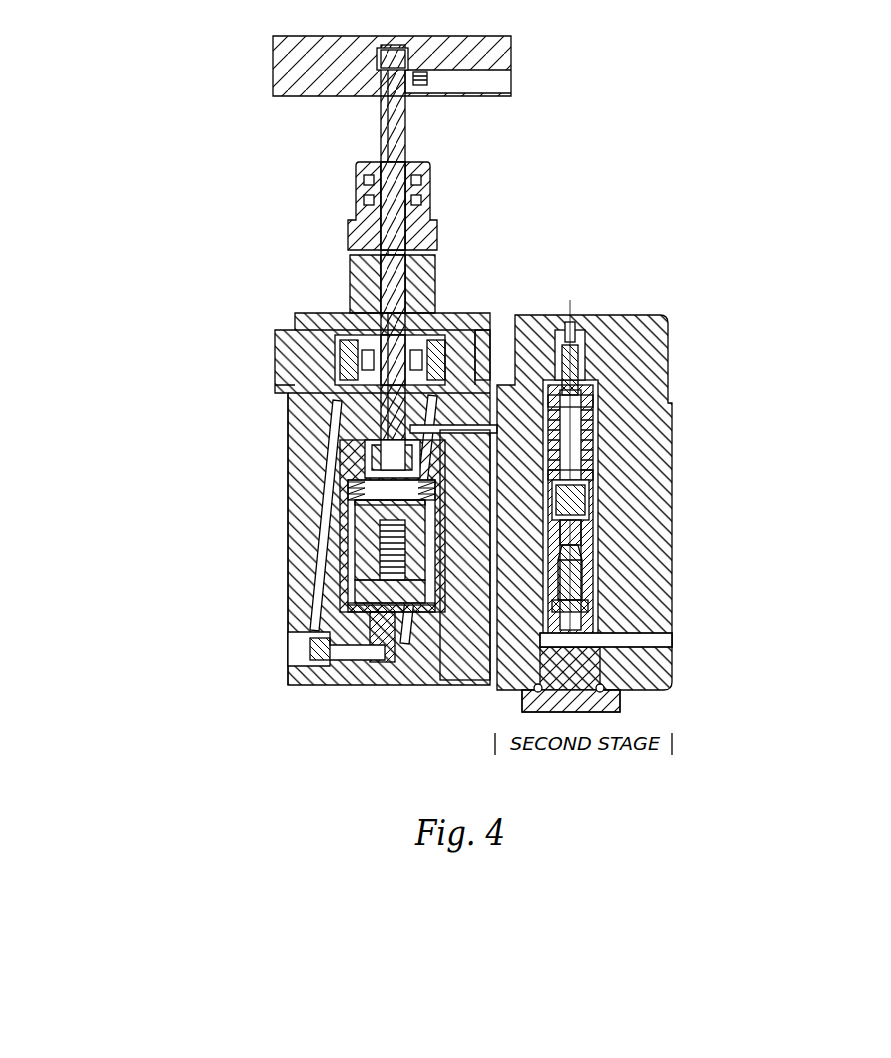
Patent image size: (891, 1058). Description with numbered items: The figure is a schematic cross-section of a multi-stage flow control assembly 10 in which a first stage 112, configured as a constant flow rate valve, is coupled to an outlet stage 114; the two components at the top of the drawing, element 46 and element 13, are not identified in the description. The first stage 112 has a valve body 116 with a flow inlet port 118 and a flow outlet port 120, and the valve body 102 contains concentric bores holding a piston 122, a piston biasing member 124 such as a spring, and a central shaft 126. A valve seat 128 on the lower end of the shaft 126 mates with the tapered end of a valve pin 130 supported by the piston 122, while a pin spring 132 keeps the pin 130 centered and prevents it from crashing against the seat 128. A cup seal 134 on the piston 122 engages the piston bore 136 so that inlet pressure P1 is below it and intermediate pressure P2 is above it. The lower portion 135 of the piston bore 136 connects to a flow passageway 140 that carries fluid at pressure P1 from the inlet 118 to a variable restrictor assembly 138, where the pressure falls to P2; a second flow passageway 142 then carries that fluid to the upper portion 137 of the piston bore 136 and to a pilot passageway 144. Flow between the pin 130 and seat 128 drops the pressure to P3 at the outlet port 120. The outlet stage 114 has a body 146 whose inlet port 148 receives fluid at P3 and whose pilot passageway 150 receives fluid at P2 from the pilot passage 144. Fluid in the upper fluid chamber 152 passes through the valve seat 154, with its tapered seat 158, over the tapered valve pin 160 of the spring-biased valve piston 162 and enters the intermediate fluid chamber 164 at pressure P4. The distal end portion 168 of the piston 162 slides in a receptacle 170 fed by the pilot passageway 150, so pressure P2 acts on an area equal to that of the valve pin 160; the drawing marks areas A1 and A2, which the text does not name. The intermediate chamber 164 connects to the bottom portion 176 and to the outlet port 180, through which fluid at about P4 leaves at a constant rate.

The fluid regulator 10 is at (118, 120).
The handle 46 is at (518, 72).
The adjustment stem 13 is at (350, 330).
The variable restrictor assembly 138 is at (350, 275).
The valve body 116 is at (295, 318).
The valve body 102 is at (333, 742).
The first stage 112 is at (168, 276).
The outlet stage 114 is at (728, 263).
The central shaft 126 is at (290, 345).
The valve seat 128 is at (300, 420).
The valve pin 130 is at (340, 450).
The upper portion of the piston bore 137 is at (330, 470).
The piston biasing member 124 is at (355, 510).
The pin spring 132 is at (348, 490).
The piston bore 136 is at (352, 505).
The cup seal 134 is at (352, 590).
The flow passageway 140 is at (355, 592).
The piston 122 is at (360, 615).
The flow inlet port 118 is at (284, 653).
The lower portion of the piston bore 135 is at (312, 668).
The pilot passageway 144 is at (408, 685).
The pilot passageway 150 is at (470, 690).
The second flow passageway 142 is at (482, 360).
The body 146 is at (650, 335).
The inlet port 148 is at (560, 340).
The upper fluid chamber 152 is at (598, 320).
The flow outlet port 120 is at (600, 300).
The tapered seat 158 is at (590, 370).
The valve seat 154 is at (598, 400).
The tapered valve pin 160 is at (598, 440).
The intermediate fluid chamber 164 is at (598, 470).
The valve piston 162 is at (598, 500).
The distal end portion 168 is at (598, 530).
The receptacle 170 is at (598, 580).
The bottom portion 176 is at (640, 640).
The outlet port 180 is at (676, 643).
The inlet pressure P1 is at (300, 330).
The intermediate pressure P2 is at (410, 490).
The outlet pressure of the first stage P3 is at (500, 420).
The outlet stage pressure P4 is at (598, 420).
The first area A1 is at (600, 300).
The second area A2 is at (598, 555).